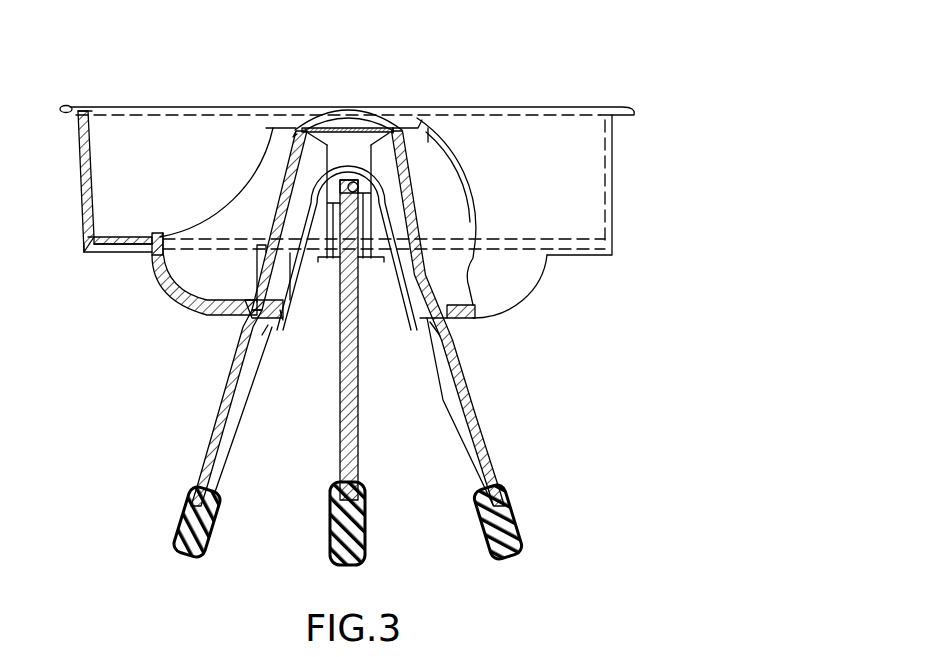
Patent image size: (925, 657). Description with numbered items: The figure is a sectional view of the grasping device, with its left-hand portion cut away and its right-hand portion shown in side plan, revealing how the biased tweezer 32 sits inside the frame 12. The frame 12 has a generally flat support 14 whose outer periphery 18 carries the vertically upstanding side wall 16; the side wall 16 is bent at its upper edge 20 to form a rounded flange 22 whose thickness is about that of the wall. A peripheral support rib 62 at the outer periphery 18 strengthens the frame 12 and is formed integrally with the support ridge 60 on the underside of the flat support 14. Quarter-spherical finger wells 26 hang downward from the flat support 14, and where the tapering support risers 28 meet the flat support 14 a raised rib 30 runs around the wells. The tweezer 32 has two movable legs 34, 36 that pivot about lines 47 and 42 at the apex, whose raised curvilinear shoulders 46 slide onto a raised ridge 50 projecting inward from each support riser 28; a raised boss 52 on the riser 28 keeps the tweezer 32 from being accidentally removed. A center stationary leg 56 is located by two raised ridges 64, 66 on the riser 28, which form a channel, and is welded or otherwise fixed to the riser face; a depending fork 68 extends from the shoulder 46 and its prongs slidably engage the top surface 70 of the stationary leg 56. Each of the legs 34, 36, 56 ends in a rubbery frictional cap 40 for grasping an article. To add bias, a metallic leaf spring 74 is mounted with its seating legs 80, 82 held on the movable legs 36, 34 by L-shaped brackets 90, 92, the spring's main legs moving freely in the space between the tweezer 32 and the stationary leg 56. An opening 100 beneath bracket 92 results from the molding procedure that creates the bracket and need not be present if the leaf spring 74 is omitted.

The frame 12 is at (630, 107).
The generally flat support 14 is at (104, 236).
The side wall 16 is at (78, 152).
The outer periphery 18 is at (94, 236).
The upper edge 20 is at (86, 108).
The rounded flange 22 is at (66, 106).
The finger well 26 is at (150, 262).
The support riser 28 is at (436, 152).
The raised rib 30 is at (156, 233).
The biased tweezer 32 is at (300, 126).
The movable leg 34 is at (215, 412).
The movable leg 36 is at (478, 420).
The frictional cap 40 is at (180, 524).
The pivot line 42 is at (395, 125).
The raised curvilinear shoulder 46 is at (326, 122).
The pivot line 47 is at (306, 128).
The raised ridge 50 is at (352, 110).
The raised boss 52 is at (403, 128).
The stationary leg 56 is at (358, 447).
The support ridge 60 is at (261, 240).
The peripheral support rib 62 is at (84, 252).
The raised ridge 64 is at (375, 252).
The raised ridge 66 is at (328, 250).
The depending fork 68 is at (372, 170).
The top surface 70 is at (360, 187).
The leaf spring 74 is at (290, 258).
The seating leg 80 is at (431, 325).
The seating leg 82 is at (270, 328).
The L-shaped bracket 90 is at (415, 314).
The L-shaped bracket 92 is at (281, 312).
The opening 100 is at (253, 314).